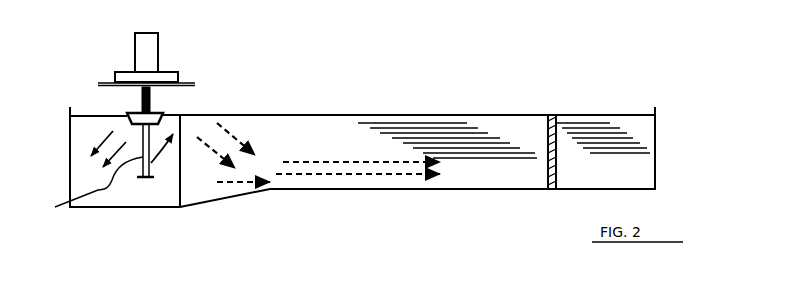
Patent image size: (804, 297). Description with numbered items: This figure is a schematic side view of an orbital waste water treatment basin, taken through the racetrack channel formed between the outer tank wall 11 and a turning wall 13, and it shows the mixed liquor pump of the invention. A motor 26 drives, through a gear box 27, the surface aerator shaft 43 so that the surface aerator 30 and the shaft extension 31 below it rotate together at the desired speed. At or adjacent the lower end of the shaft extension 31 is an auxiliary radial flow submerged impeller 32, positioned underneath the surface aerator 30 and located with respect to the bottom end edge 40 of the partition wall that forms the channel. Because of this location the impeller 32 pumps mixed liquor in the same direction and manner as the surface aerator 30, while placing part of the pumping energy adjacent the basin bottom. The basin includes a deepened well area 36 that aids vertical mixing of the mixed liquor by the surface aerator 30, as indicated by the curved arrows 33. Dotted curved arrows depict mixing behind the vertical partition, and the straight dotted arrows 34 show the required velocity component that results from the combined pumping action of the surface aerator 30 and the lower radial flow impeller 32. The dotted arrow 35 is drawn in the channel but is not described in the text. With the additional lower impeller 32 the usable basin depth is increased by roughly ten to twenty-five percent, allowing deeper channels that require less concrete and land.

The outer tank wall 11 is at (659, 180).
The turning wall 13 is at (550, 115).
The motor 26 is at (135, 50).
The gear box 27 is at (115, 78).
The surface aerator shaft 43 is at (140, 97).
The auxiliary radial flow submerged impeller 32 is at (140, 182).
The surface aerator 30 is at (180, 116).
The curved arrows 33 is at (99, 142).
The shaft extension 31 is at (89, 192).
The bottom end edge 40 is at (177, 190).
The straight dotted arrows 34 is at (347, 161).
The flow arrow 35 is at (233, 182).
The deepened well area 36 is at (222, 203).